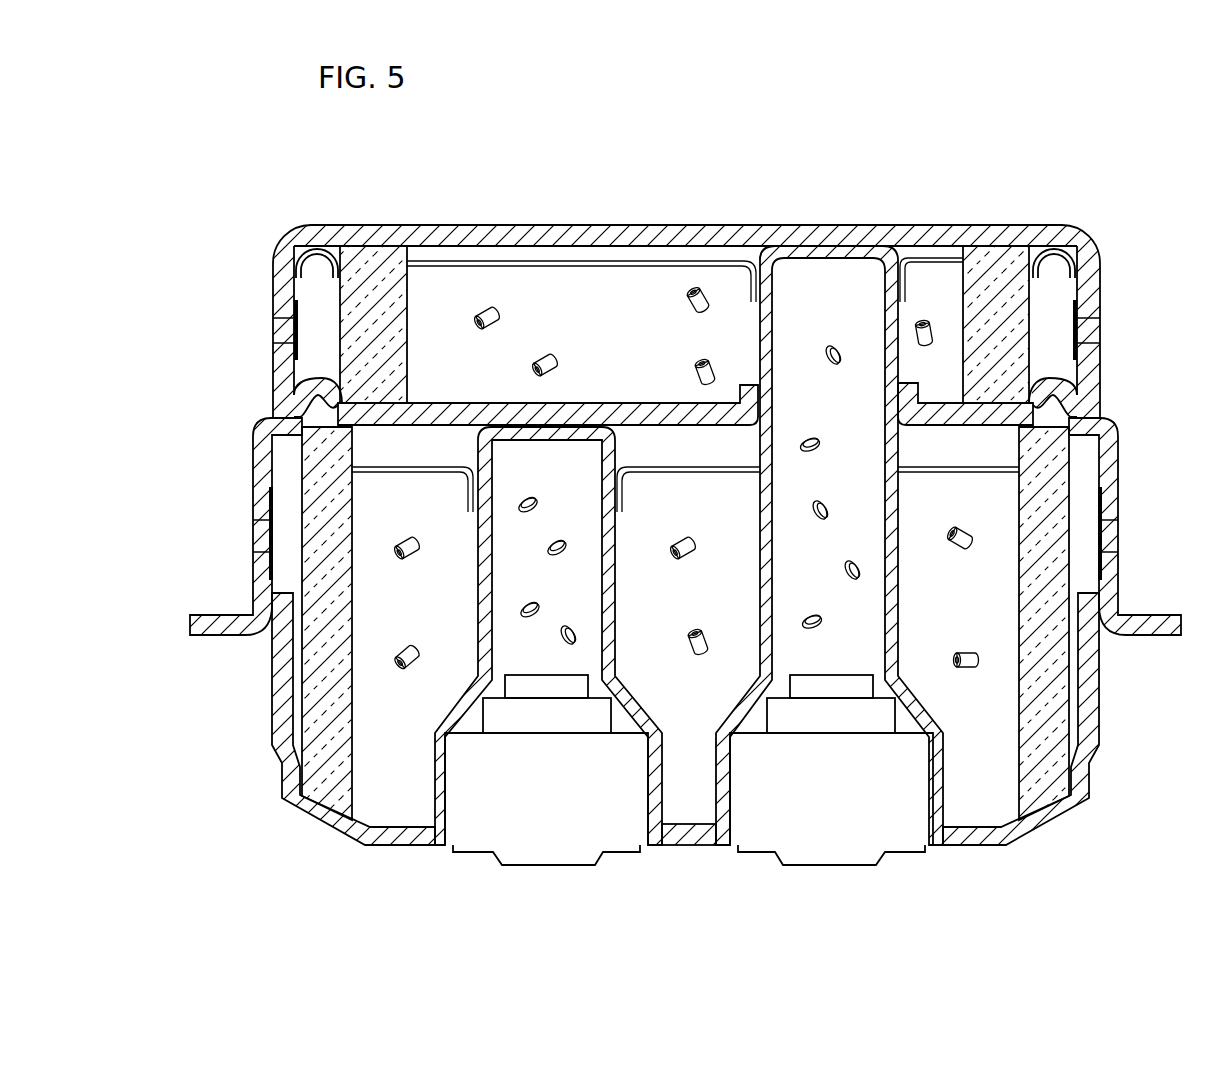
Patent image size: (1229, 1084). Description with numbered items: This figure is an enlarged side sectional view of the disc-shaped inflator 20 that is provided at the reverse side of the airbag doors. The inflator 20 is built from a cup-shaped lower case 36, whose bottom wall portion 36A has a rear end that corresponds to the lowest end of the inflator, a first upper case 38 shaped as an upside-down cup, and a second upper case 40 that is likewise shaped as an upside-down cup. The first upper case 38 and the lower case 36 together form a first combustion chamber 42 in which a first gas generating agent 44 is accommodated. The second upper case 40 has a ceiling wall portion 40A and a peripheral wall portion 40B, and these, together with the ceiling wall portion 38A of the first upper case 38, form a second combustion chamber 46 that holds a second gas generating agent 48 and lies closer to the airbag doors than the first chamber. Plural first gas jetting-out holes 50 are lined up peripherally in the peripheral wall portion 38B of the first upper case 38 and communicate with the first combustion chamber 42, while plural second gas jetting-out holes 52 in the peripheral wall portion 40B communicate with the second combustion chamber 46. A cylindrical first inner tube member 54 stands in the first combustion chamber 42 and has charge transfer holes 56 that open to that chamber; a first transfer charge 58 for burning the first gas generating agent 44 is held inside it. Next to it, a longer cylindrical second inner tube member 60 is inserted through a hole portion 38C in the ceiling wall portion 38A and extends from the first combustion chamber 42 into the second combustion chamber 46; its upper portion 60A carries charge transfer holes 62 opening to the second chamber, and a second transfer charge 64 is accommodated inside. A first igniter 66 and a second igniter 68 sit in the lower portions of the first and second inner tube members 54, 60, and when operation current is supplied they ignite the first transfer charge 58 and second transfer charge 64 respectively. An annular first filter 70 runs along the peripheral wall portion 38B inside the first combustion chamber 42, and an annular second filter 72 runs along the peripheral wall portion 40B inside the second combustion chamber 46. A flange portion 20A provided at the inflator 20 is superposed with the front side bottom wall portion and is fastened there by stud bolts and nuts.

The inflator 20 is at (672, 146).
The flange portion 20A is at (1155, 635).
The lower case 36 is at (268, 746).
The bottom wall portion 36A is at (690, 830).
The first upper case 38 is at (250, 470).
The ceiling wall portion 38A is at (628, 400).
The peripheral wall portion 38B is at (262, 518).
The hole portion 38C is at (875, 390).
The second upper case 40 is at (264, 272).
The ceiling wall portion 40A is at (577, 223).
The peripheral wall portion 40B is at (340, 383).
The first combustion chamber 42 is at (688, 510).
The first gas generating agent 44 is at (405, 642).
The second combustion chamber 46 is at (597, 315).
The second gas generating agent 48 is at (490, 310).
The first gas jetting-out holes 50 is at (262, 520).
The second gas jetting-out holes 52 is at (290, 332).
The first inner tube member 54 is at (475, 535).
The charge transfer holes 56 is at (615, 548).
The first transfer charge 58 is at (560, 545).
The second inner tube member 60 is at (900, 497).
The upper portion 60A is at (758, 310).
The charge transfer holes 62 is at (758, 337).
The second transfer charge 64 is at (812, 440).
The first igniter 66 is at (547, 828).
The second igniter 68 is at (848, 828).
The first filter 70 is at (297, 585).
The second filter 72 is at (307, 392).